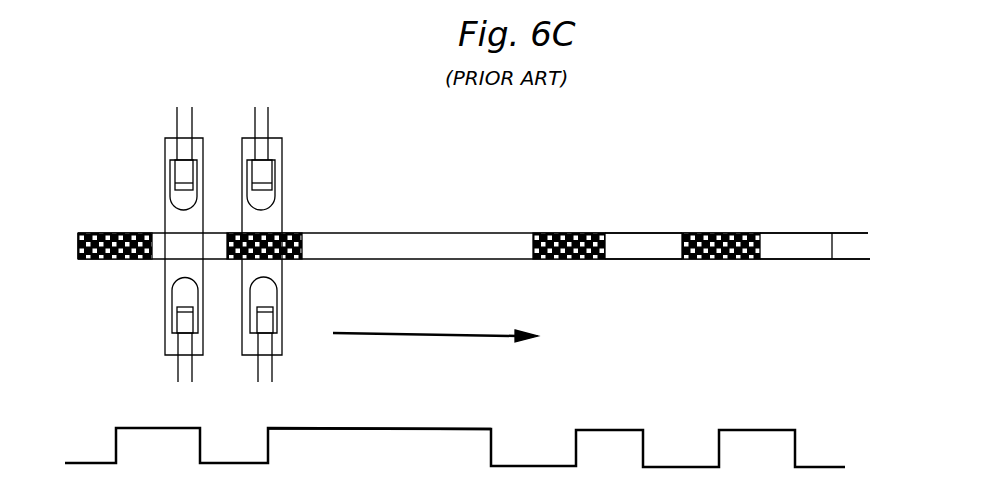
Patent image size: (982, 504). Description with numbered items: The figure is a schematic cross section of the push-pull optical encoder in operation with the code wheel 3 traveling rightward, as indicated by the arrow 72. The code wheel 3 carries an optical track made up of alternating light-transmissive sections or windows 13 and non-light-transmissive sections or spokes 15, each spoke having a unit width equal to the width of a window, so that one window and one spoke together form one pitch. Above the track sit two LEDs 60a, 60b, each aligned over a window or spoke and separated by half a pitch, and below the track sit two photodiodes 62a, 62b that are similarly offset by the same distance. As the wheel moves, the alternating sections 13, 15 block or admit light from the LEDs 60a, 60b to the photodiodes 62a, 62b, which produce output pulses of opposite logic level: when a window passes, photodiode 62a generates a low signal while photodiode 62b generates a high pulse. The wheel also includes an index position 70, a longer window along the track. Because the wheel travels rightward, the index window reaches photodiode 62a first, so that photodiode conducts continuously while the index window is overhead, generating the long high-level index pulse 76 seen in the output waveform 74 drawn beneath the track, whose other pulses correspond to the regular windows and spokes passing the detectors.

The code wheel 3 is at (837, 233).
The light-transmissive sections or windows 13 is at (792, 248).
The non-light-transmissive sections or spokes 15 is at (695, 233).
The LED 60a is at (175, 188).
The LED 60b is at (262, 185).
The photodiode 62a is at (182, 338).
The photodiode 62b is at (268, 312).
The index position 70 is at (450, 243).
The arrow 72 is at (445, 335).
The head output signal waveform 74 is at (83, 462).
The high-level index pulse 76 is at (435, 430).